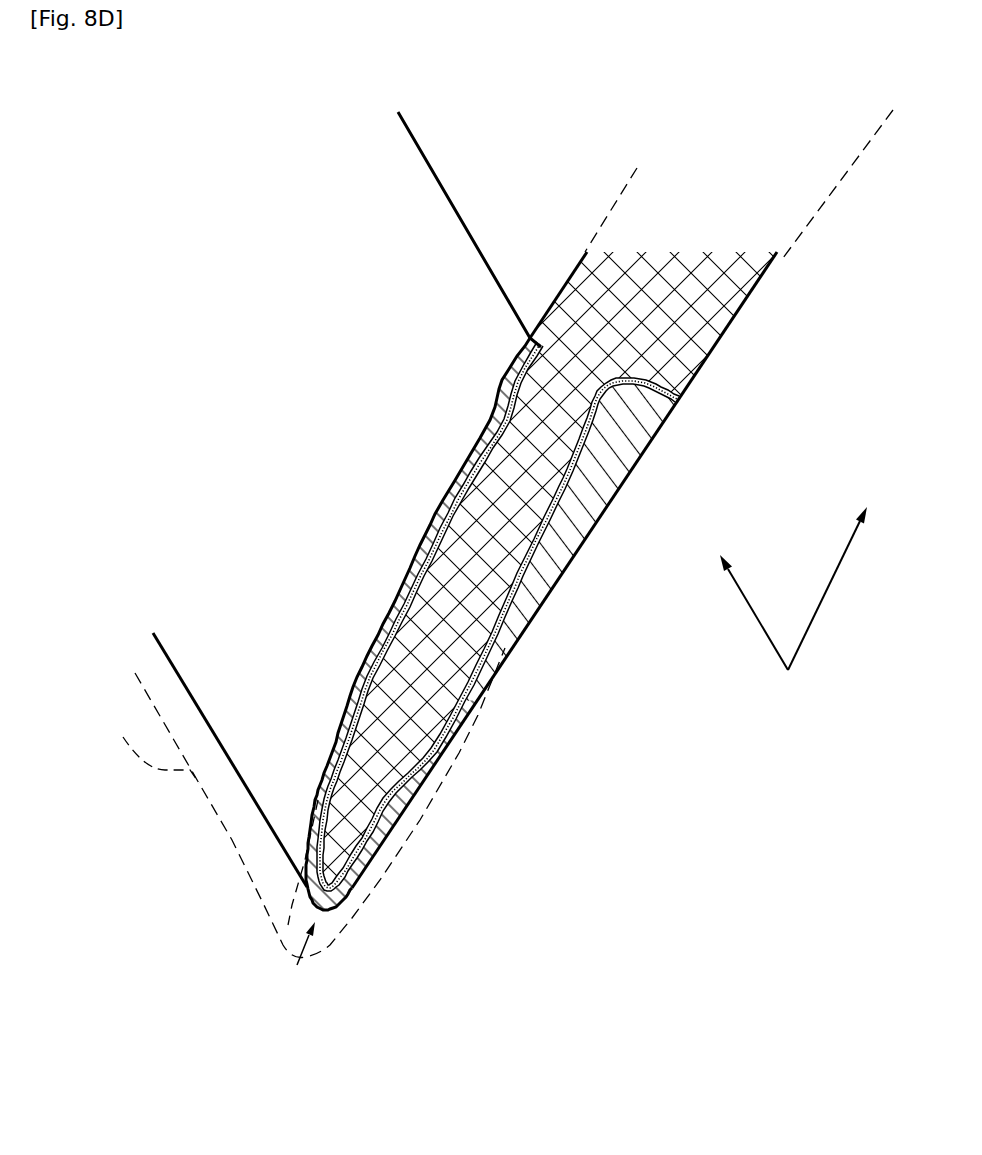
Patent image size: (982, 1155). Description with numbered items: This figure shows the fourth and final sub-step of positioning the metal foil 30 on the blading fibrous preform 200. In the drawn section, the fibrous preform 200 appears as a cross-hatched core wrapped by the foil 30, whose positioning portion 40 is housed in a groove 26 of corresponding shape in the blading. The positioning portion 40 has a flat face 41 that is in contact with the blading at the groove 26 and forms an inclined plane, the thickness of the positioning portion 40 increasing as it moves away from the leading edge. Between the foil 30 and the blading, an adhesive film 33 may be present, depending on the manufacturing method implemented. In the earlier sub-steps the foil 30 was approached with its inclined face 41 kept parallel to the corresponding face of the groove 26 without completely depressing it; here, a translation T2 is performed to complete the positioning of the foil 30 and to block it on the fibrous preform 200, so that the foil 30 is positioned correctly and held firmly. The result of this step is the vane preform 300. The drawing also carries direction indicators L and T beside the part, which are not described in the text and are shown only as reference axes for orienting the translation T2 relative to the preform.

The fibrous preform 200 is at (700, 320).
The groove 26 is at (585, 460).
The metal foil 30 is at (227, 712).
The adhesive film 33 is at (373, 873).
The positioning portion 40 is at (592, 498).
The flat face 41 is at (567, 560).
The vane preform 300 is at (599, 757).
The translation T2 is at (313, 965).
The longitudinal axis L is at (748, 593).
The transverse axis T is at (831, 569).